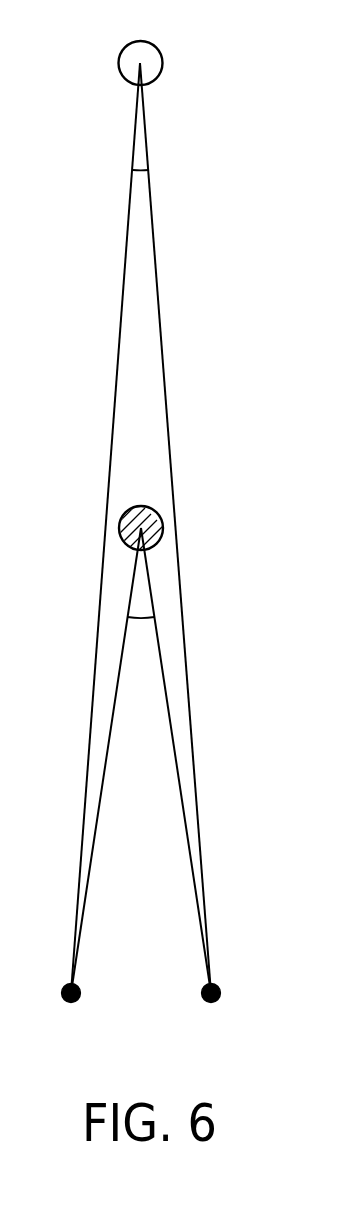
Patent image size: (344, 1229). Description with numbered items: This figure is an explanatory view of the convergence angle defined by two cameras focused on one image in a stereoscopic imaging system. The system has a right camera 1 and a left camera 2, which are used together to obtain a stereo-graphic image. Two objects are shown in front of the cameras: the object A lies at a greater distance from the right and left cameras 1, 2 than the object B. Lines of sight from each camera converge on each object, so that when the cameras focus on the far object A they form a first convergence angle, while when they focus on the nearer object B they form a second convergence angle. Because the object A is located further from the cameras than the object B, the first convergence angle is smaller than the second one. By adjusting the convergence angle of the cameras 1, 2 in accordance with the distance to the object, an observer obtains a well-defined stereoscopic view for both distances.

The object A is at (158, 47).
The object B is at (157, 512).
The right camera 1 is at (220, 998).
The left camera 2 is at (62, 1000).